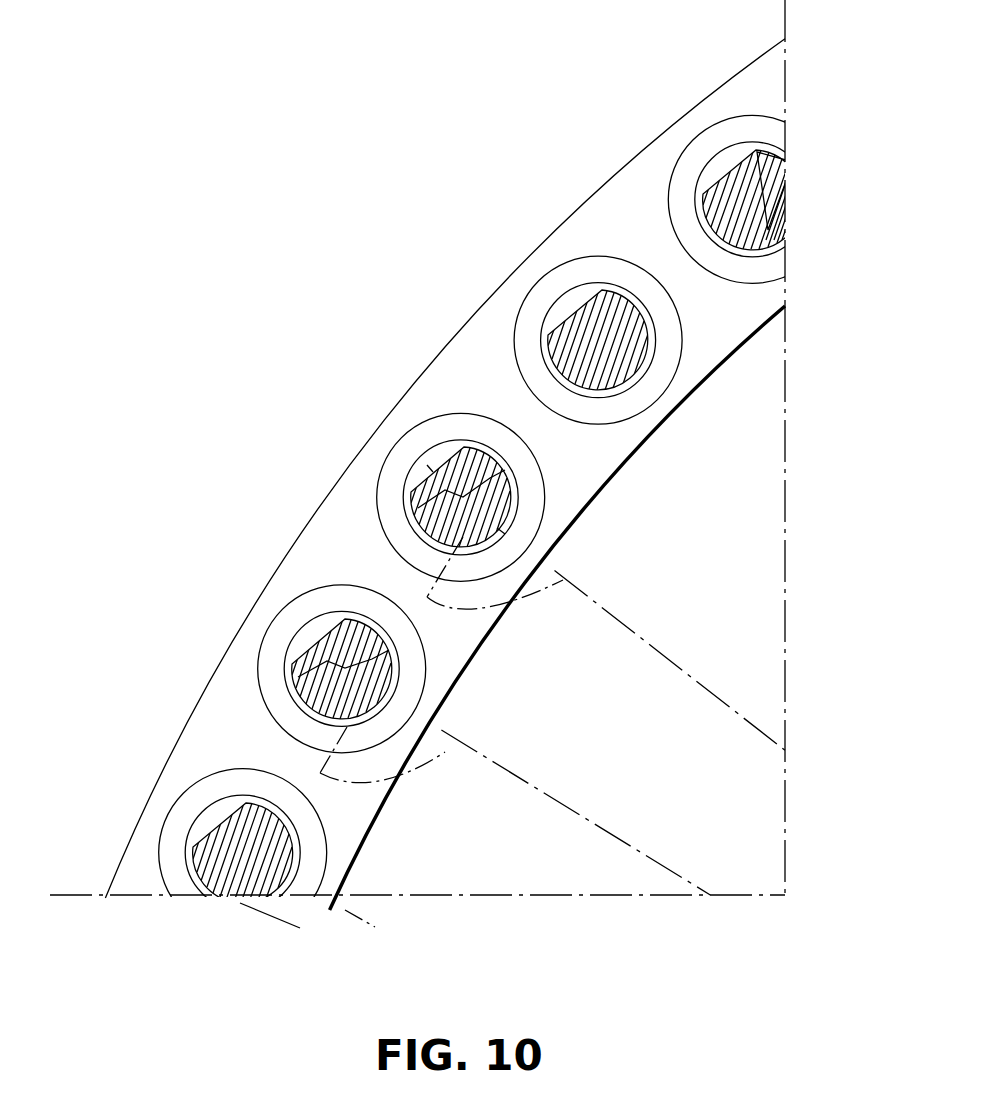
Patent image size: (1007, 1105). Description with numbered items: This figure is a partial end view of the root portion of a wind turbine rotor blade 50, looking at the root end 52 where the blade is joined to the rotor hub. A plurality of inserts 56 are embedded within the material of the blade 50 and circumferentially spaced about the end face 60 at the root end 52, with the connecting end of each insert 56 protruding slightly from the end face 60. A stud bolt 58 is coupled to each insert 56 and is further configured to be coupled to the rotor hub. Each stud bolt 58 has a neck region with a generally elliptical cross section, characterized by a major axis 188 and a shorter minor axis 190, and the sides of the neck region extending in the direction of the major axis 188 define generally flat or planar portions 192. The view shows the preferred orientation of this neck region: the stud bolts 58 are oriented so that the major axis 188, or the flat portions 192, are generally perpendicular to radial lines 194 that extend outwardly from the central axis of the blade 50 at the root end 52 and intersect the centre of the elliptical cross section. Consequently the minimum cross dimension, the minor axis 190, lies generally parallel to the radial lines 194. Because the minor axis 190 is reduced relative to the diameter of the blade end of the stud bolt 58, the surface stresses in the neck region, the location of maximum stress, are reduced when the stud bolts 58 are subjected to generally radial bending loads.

The rotor blade 50 is at (420, 474).
The root end 52 is at (558, 227).
The insert 56 is at (720, 117).
The stud bolt 58 is at (727, 173).
The end face 60 is at (244, 742).
The major axis 188 is at (463, 440).
The minor axis 190 is at (417, 507).
The flat portion 192 is at (430, 468).
The radial line 194 is at (678, 663).